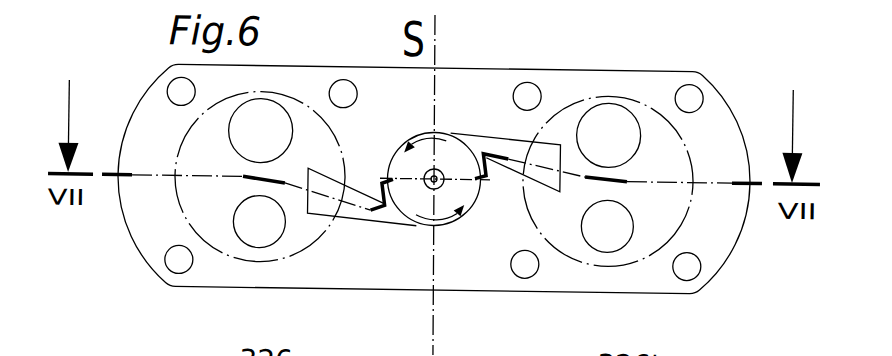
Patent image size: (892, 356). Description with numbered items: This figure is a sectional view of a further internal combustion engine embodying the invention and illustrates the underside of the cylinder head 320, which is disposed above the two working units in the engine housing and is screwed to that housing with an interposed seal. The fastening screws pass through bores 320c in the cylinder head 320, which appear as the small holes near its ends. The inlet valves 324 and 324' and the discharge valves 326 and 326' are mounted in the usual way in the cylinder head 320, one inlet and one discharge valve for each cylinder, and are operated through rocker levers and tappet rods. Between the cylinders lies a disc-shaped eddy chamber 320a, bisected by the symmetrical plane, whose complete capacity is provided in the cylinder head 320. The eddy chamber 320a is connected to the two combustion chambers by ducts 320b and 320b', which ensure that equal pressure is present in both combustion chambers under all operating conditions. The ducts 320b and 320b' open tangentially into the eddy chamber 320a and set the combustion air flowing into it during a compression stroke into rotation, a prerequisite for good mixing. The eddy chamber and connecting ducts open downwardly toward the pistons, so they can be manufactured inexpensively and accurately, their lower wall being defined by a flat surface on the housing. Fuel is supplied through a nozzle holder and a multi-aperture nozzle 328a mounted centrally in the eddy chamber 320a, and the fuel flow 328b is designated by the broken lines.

The cylinder head 320 is at (688, 62).
The eddy chamber 320a is at (413, 207).
The duct 320b is at (356, 255).
The duct 320b' is at (522, 110).
The bore 320c is at (690, 267).
The inlet valve 324 is at (277, 96).
The inlet valve 324' is at (612, 97).
The discharge valve 326 is at (251, 257).
The discharge valve 326' is at (600, 263).
The multi-aperture nozzle 328a is at (450, 190).
The fuel flow 328b is at (461, 143).